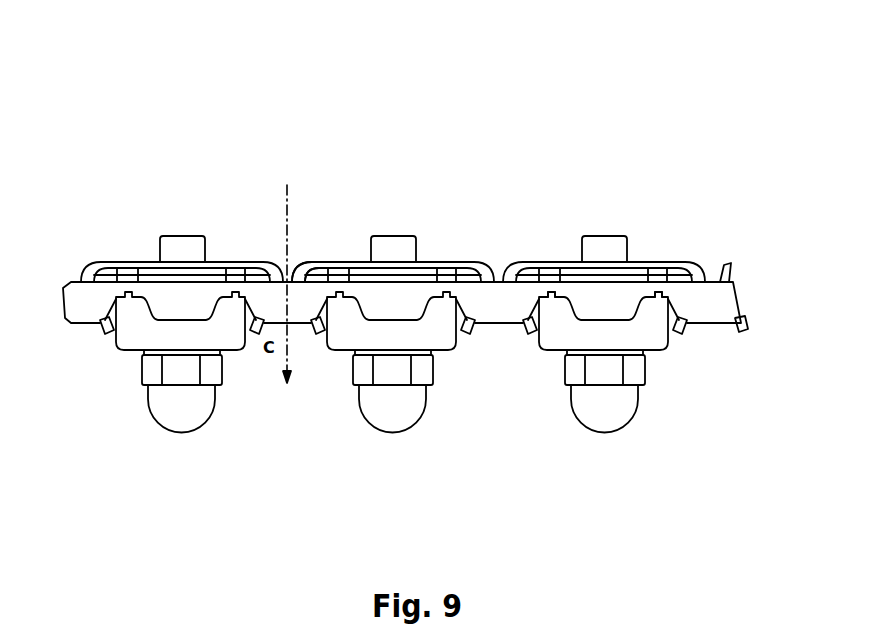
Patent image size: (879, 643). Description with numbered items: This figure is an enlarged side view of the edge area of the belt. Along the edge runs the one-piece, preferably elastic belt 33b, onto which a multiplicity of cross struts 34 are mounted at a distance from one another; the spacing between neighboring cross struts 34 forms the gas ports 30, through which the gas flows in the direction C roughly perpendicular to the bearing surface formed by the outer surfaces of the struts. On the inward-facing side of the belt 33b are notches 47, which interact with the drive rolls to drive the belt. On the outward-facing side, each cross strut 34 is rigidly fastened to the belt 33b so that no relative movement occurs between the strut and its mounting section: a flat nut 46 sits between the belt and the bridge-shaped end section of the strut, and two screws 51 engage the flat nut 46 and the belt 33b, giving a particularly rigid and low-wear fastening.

The gas port 30 is at (260, 362).
The belt 33b is at (478, 310).
The cross strut 34 is at (306, 277).
The flat nut 46 is at (160, 279).
The notch 47 is at (653, 297).
The screw 51 is at (392, 255).